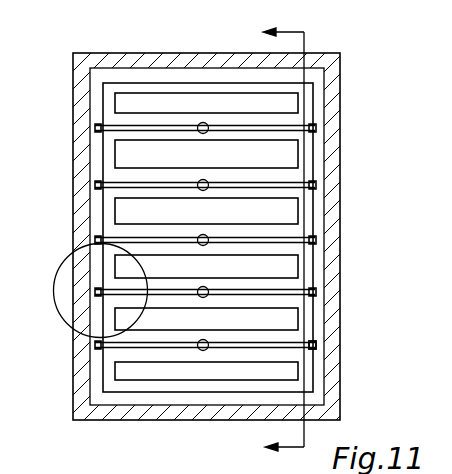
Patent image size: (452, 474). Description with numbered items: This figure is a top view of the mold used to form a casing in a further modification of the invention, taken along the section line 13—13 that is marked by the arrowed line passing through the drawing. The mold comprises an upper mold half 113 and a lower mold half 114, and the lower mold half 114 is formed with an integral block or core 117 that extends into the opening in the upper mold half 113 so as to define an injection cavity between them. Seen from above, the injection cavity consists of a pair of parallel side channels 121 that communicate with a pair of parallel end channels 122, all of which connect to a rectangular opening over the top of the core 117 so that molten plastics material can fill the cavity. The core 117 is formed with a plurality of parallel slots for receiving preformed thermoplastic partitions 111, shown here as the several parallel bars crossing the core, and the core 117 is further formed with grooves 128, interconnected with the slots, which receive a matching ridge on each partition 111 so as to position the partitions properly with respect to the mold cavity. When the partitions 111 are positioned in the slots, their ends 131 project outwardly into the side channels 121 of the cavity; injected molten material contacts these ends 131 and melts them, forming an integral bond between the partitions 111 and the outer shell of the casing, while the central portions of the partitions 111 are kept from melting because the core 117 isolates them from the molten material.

The section line 13— 13 is at (267, 241).
The preformed thermoplastic partitions 111 is at (293, 126).
The upper mold half 113 is at (110, 413).
The lower mold half 114 is at (163, 371).
The block or core 117 is at (305, 160).
The side channels 121 is at (95, 150).
The end channels 122 is at (173, 77).
The grooves 128 is at (203, 134).
The ends of partitions 131 is at (317, 346).